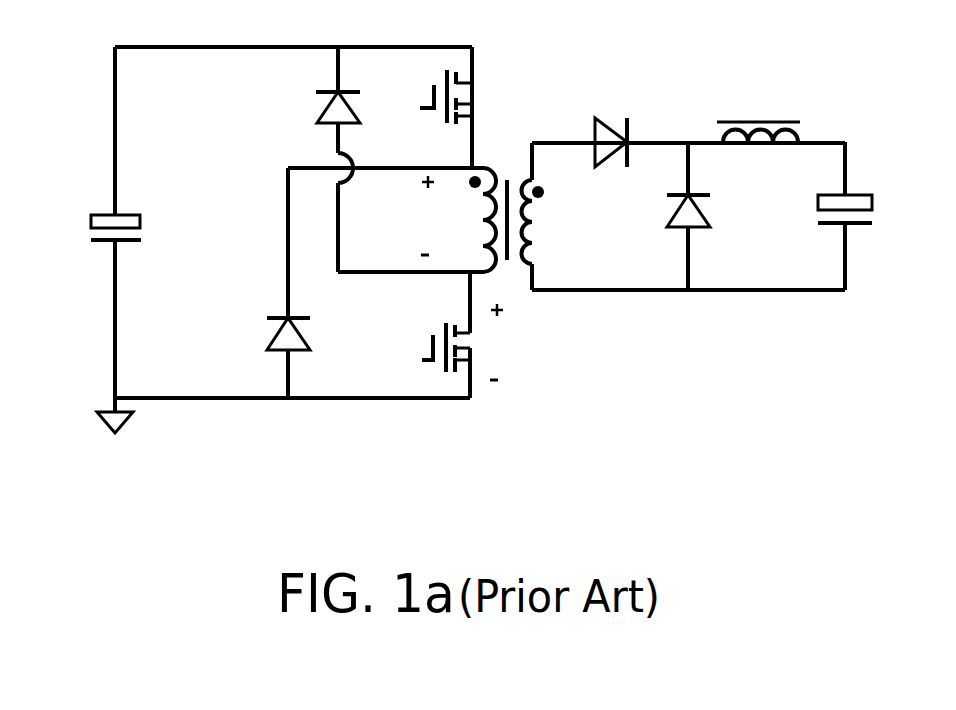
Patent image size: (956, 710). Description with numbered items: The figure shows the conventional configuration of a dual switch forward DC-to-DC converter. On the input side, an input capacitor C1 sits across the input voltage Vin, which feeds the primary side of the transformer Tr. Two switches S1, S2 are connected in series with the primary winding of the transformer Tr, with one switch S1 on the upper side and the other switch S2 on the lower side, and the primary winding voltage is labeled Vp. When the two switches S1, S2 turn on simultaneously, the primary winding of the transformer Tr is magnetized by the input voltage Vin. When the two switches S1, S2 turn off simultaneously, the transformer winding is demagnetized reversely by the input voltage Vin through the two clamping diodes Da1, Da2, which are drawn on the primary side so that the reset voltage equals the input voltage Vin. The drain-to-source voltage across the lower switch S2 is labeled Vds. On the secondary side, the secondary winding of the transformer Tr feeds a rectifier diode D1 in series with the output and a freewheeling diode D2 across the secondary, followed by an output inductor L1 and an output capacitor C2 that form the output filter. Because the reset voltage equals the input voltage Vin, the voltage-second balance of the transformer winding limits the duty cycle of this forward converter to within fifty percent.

The input capacitor C1 is at (80, 240).
The input voltage Vin is at (144, 83).
The clamping diode Da1 is at (297, 159).
The clamping diode Da2 is at (246, 283).
The switch S1 is at (419, 107).
The switch S2 is at (419, 335).
The drain-source voltage of second switch Vds is at (503, 340).
The transformer Tr is at (506, 198).
The primary winding voltage Vp is at (436, 215).
The first rectifier diode D1 is at (602, 121).
The second rectifier diode D2 is at (651, 216).
The output inductor L1 is at (758, 111).
The output capacitor C2 is at (849, 216).